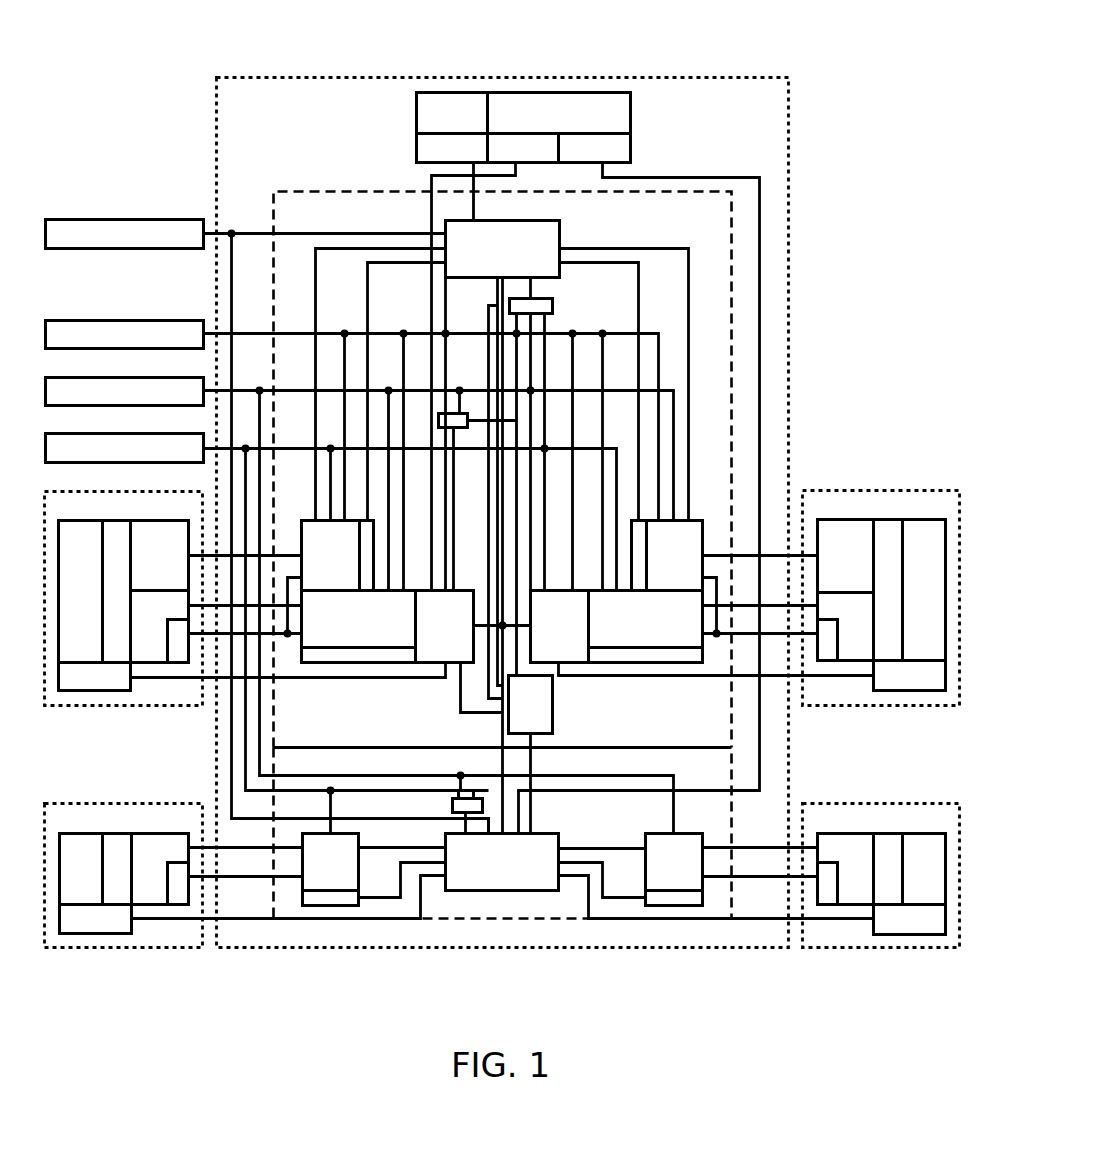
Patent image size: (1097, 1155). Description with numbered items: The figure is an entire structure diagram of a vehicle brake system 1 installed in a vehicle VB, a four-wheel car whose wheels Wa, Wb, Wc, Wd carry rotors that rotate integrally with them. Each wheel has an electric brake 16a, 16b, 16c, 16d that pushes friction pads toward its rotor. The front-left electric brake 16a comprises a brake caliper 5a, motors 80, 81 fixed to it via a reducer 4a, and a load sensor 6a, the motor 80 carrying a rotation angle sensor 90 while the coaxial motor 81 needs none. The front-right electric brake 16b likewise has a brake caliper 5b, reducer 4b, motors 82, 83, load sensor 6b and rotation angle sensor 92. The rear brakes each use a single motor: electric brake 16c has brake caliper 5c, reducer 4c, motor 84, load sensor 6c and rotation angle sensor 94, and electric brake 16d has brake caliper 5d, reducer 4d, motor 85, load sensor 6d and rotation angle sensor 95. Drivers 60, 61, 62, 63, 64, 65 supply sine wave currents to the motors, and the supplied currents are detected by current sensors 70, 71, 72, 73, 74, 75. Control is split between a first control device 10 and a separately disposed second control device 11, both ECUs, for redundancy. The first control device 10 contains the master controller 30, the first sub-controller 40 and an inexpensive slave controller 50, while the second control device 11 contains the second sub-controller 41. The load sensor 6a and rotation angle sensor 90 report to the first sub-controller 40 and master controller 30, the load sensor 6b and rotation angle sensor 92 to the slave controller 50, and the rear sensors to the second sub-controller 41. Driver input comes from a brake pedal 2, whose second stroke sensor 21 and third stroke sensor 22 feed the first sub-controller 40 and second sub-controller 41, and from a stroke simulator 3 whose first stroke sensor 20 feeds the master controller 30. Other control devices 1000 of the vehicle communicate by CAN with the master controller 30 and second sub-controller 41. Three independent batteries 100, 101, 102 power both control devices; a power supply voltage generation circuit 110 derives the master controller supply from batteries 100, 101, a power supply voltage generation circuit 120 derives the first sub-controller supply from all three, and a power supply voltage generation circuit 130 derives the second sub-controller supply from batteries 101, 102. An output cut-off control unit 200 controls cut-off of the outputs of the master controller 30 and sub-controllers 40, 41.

The vehicle brake system 1 is at (818, 40).
The brake pedal 2 is at (563, 102).
The stroke simulator 3 is at (449, 102).
The first control device 10 is at (732, 320).
The second control device 11 is at (592, 920).
The first stroke sensor 20 is at (422, 150).
The second stroke sensor 21 is at (528, 153).
The third stroke sensor 22 is at (620, 148).
The master controller 30 is at (543, 235).
The first sub-controller 40 is at (468, 598).
The second sub-controller 41 is at (500, 895).
The slave controller 50 is at (540, 600).
The driver 60 is at (370, 632).
The driver 61 is at (310, 530).
The driver 62 is at (624, 635).
The driver 63 is at (693, 530).
The driver 64 is at (343, 845).
The driver 65 is at (693, 840).
The current sensor 70 is at (338, 655).
The current sensor 71 is at (368, 535).
The current sensor 72 is at (659, 657).
The current sensor 73 is at (637, 537).
The current sensor 74 is at (333, 900).
The current sensor 75 is at (672, 898).
The motor 80 is at (150, 652).
The motor 81 is at (153, 518).
The motor 82 is at (852, 653).
The motor 83 is at (843, 527).
The motor 84 is at (158, 840).
The motor 85 is at (843, 840).
The rotation angle sensor 90 is at (175, 652).
The rotation angle sensor 92 is at (827, 653).
The rotation angle sensor 94 is at (175, 895).
The rotation angle sensor 95 is at (828, 895).
The battery 100 is at (150, 318).
The battery 101 is at (150, 375).
The battery 102 is at (150, 432).
The power supply voltage generation circuit 110 is at (553, 305).
The power supply voltage generation circuit 120 is at (453, 410).
The power supply voltage generation circuit 130 is at (459, 775).
The output cut-off control unit 200 is at (553, 723).
The other control devices 1000 is at (128, 218).
The reducer 4a is at (118, 518).
The reducer 4b is at (885, 527).
The reducer 4c is at (117, 840).
The reducer 4d is at (885, 838).
The brake caliper 5a is at (83, 518).
The brake caliper 5b is at (925, 527).
The brake caliper 5c is at (82, 840).
The brake caliper 5d is at (919, 838).
The load sensor 6a is at (90, 678).
The load sensor 6b is at (915, 683).
The load sensor 6c is at (93, 922).
The load sensor 6d is at (907, 922).
The electric brake 16a is at (116, 703).
The electric brake 16b is at (885, 705).
The electric brake 16c is at (126, 948).
The electric brake 16d is at (864, 935).
The vehicle VB is at (787, 145).
The wheel Wa is at (122, 490).
The wheel Wb is at (858, 488).
The wheel Wc is at (128, 802).
The wheel Wd is at (858, 802).